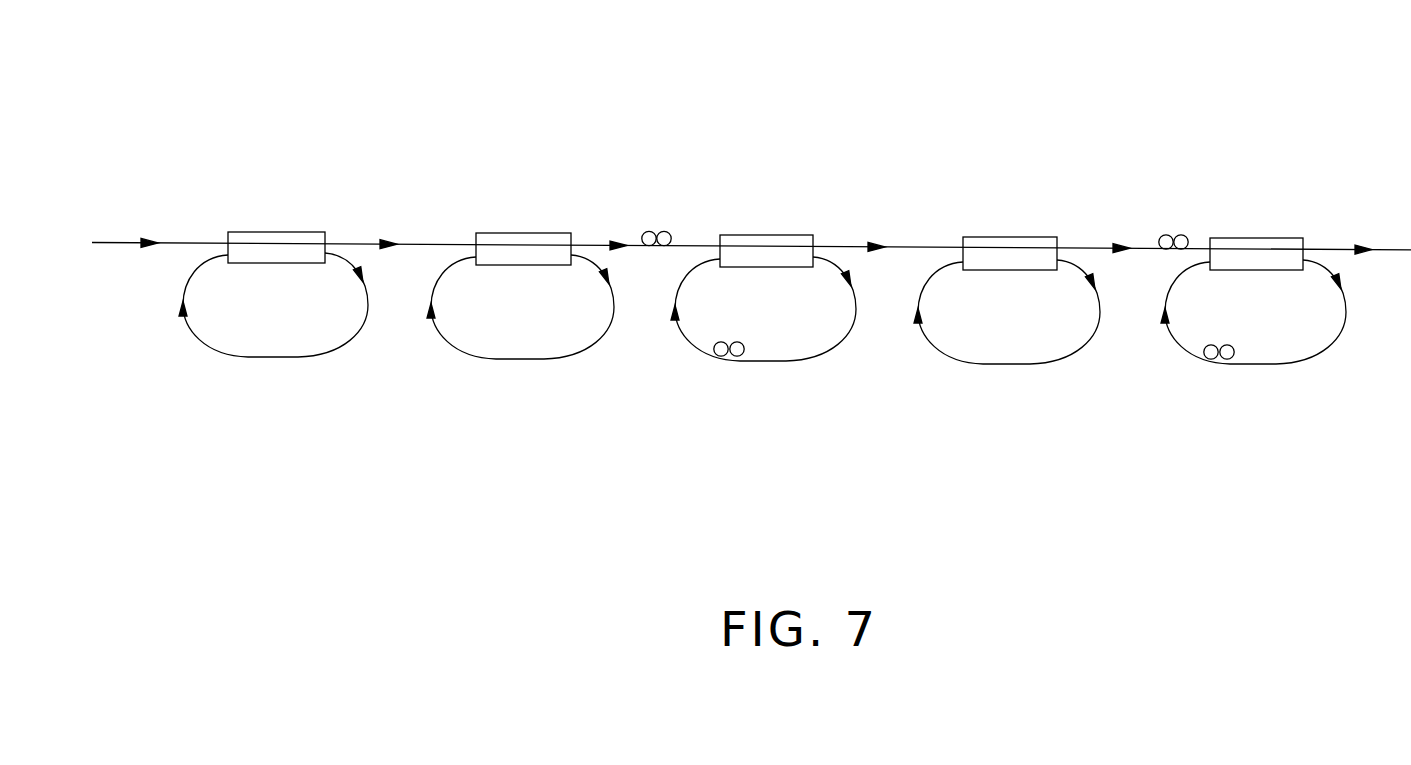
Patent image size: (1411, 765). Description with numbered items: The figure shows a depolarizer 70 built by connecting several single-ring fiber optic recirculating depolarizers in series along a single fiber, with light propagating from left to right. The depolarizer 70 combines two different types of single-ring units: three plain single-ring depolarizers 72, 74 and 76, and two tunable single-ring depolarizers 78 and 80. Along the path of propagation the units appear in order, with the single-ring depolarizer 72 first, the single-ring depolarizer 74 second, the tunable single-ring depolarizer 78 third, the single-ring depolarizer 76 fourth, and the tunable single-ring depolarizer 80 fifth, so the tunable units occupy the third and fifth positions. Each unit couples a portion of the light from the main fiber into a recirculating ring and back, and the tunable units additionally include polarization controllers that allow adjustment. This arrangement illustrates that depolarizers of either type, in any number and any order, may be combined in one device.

The depolarizer 70 is at (717, 98).
The single-ring depolarizer 72 is at (280, 221).
The single-ring depolarizer 74 is at (518, 222).
The tunable single-ring depolarizer 78 is at (767, 228).
The single-ring depolarizer 76 is at (1012, 227).
The tunable single-ring depolarizer 80 is at (1249, 237).